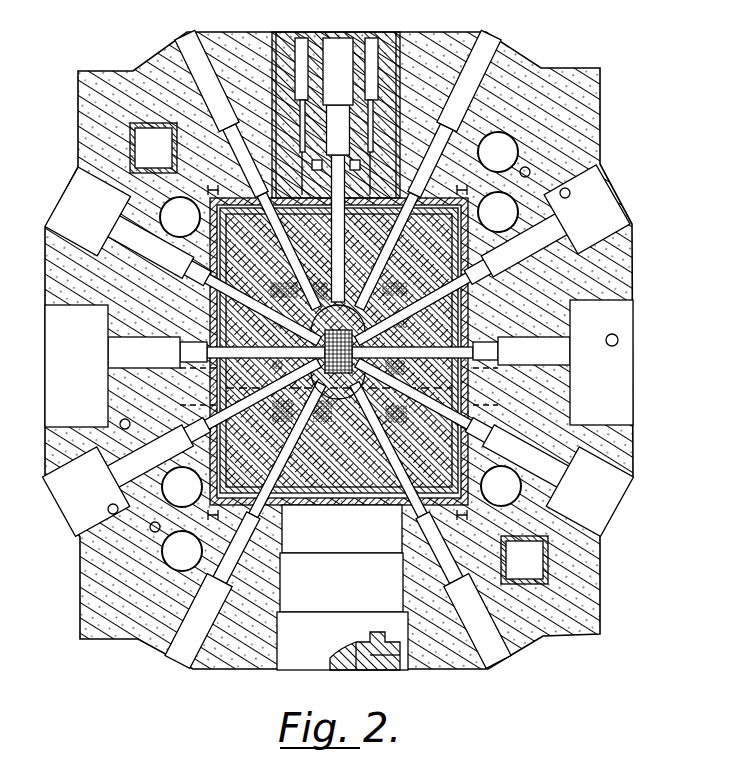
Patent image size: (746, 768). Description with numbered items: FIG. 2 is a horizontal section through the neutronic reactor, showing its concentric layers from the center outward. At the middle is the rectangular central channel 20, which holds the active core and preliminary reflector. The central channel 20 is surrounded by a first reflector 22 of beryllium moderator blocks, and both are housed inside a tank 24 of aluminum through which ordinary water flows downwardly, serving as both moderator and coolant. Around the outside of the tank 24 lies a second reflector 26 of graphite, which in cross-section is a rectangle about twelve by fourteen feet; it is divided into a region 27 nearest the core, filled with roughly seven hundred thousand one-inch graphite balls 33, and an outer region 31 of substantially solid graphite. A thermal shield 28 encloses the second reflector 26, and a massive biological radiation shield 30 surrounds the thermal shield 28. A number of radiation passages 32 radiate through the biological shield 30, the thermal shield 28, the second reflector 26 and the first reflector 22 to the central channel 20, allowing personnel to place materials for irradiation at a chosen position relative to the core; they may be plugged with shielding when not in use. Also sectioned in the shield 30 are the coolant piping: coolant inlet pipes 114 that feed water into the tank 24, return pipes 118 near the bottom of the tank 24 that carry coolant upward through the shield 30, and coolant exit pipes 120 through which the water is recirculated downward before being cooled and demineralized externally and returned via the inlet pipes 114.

The central channel 20 is at (338, 340).
The first reflector 22 is at (390, 330).
The tank 24 is at (336, 390).
The second reflector 26 is at (240, 320).
The region of graphite balls 27 is at (312, 278).
The thermal shield 28 is at (458, 318).
The biological radiation shield 30 is at (590, 100).
The region of solid graphite 31 is at (330, 497).
The radiation passages 32 is at (178, 52).
The graphite balls 33 is at (322, 420).
The coolant inlet pipes 114 is at (505, 143).
The return pipes 118 is at (506, 230).
The coolant exit pipes 120 is at (162, 214).